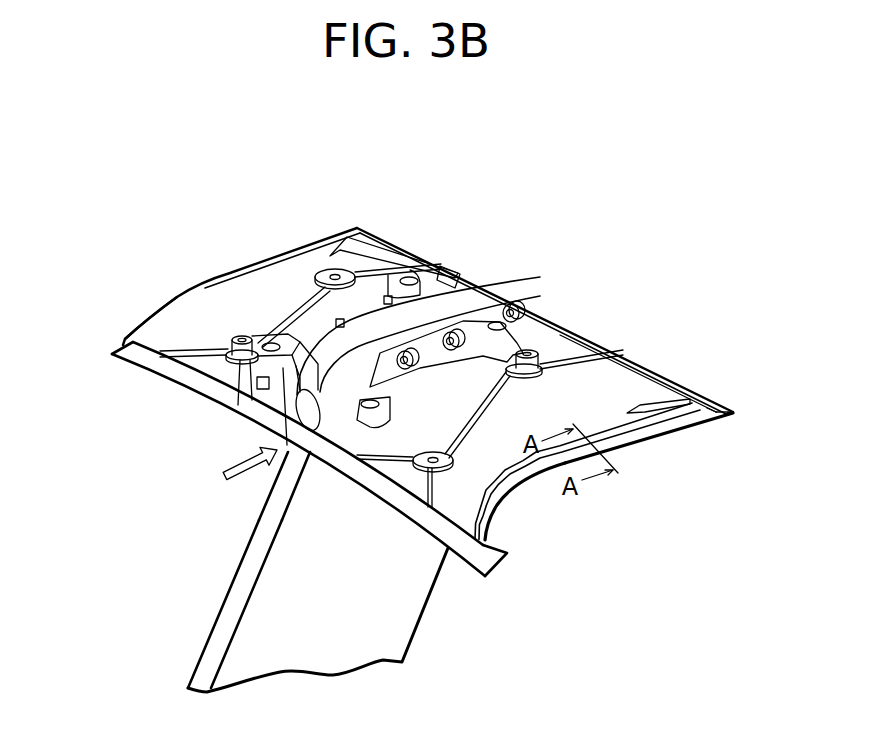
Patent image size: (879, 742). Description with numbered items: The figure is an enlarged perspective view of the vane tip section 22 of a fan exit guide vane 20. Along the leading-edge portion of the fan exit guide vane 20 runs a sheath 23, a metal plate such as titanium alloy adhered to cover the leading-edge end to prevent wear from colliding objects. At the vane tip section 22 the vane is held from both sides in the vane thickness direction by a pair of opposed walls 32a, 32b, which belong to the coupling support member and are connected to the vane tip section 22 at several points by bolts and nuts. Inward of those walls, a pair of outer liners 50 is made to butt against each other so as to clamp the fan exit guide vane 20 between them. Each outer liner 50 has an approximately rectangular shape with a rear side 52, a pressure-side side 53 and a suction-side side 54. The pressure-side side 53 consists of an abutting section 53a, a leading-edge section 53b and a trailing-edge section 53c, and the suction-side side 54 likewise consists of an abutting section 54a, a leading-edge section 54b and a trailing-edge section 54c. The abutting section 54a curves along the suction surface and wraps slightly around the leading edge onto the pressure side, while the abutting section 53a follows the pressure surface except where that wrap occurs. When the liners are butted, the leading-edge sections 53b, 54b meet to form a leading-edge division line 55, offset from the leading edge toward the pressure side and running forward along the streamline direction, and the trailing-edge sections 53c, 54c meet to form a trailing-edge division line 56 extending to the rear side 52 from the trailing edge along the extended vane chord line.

The fan exit guide vane 20 is at (353, 634).
The vane tip section 22 is at (297, 419).
The sheath 23 is at (220, 636).
The opposed wall 32a is at (280, 392).
The opposed wall 32b is at (280, 489).
The outer liner 50 is at (381, 260).
The rear side 52 is at (443, 259).
The pressure-side side 53 is at (254, 253).
The abutting section 53a is at (178, 292).
The leading-edge section 53b is at (119, 350).
The trailing-edge section 53c is at (343, 231).
The suction-side side 54 is at (645, 434).
The abutting section 54a is at (513, 494).
The leading-edge section 54b is at (497, 568).
The trailing-edge section 54c is at (720, 421).
The leading-edge division line 55 is at (282, 431).
The trailing-edge division line 56 is at (520, 293).